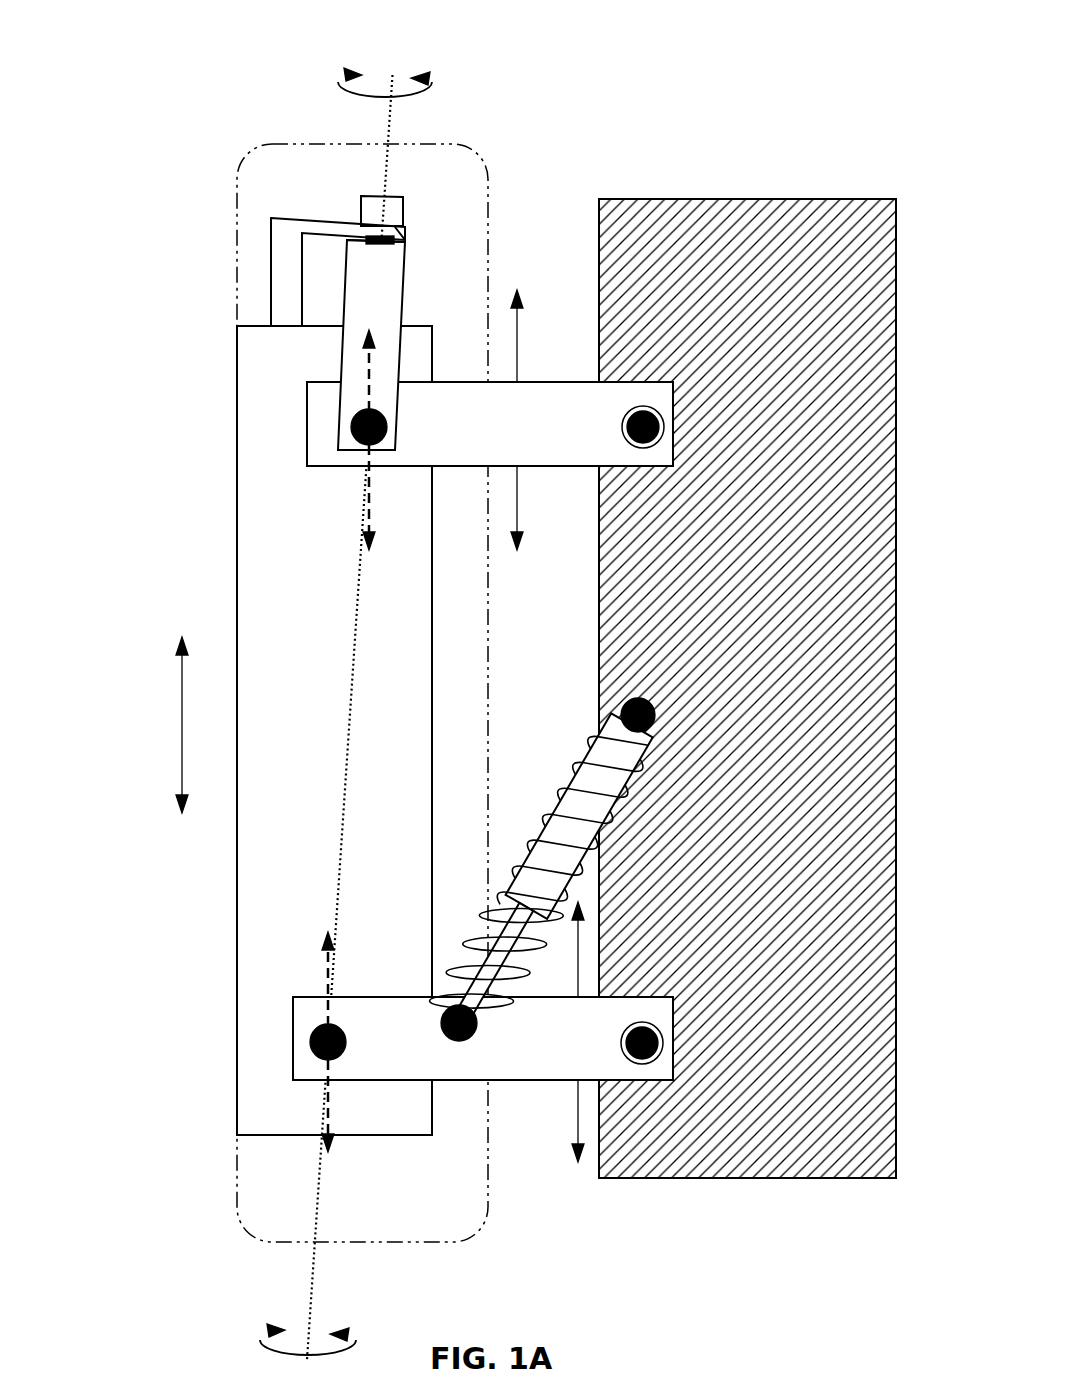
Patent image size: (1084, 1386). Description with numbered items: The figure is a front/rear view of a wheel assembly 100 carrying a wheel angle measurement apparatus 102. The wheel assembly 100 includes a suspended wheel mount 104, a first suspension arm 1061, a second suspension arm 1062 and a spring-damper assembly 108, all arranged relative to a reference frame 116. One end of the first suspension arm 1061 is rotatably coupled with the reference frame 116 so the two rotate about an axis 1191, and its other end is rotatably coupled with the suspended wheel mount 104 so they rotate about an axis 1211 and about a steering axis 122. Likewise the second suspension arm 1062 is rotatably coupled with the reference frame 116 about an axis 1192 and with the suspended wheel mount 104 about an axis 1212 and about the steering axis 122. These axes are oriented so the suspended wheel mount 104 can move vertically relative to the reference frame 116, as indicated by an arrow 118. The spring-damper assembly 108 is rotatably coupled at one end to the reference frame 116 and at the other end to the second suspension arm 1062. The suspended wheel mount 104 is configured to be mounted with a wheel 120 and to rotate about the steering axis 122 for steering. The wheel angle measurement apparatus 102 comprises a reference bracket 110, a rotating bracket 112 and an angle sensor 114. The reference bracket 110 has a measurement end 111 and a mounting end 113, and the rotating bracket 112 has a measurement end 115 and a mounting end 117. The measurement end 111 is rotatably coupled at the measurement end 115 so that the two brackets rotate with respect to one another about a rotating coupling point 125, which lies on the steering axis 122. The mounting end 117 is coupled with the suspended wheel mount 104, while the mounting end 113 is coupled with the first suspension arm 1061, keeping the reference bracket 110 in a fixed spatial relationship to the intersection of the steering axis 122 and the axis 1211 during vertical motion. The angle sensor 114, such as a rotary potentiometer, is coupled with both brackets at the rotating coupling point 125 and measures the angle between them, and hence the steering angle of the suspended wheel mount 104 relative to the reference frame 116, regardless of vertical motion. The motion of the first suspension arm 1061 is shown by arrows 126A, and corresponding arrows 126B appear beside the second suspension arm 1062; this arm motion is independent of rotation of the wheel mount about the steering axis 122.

The wheel assembly 100 is at (458, 83).
The wheel angle measurement apparatus 102 is at (354, 268).
The suspended wheel mount 104 is at (433, 573).
The first suspension arm 1061 is at (575, 382).
The second suspension arm 1062 is at (534, 1080).
The spring-damper assembly 108 is at (565, 772).
The reference bracket 110 is at (405, 313).
The measurement end 111 is at (356, 269).
The rotating bracket 112 is at (335, 218).
The mounting end 113 is at (340, 425).
The angle sensor 114 is at (404, 208).
The measurement end 115 is at (408, 235).
The reference frame 116 is at (765, 1178).
The mounting end 117 is at (270, 318).
The arrow 118 is at (182, 717).
The axis 1191 is at (660, 432).
The axis 1192 is at (663, 1048).
The wheel 120 is at (237, 257).
The axis 1211 is at (357, 447).
The axis 1212 is at (320, 1058).
The steering axis 122 is at (352, 633).
The rotating coupling point 125 is at (384, 249).
The arrows 126A is at (517, 325).
The second link motion direction 126B is at (578, 983).